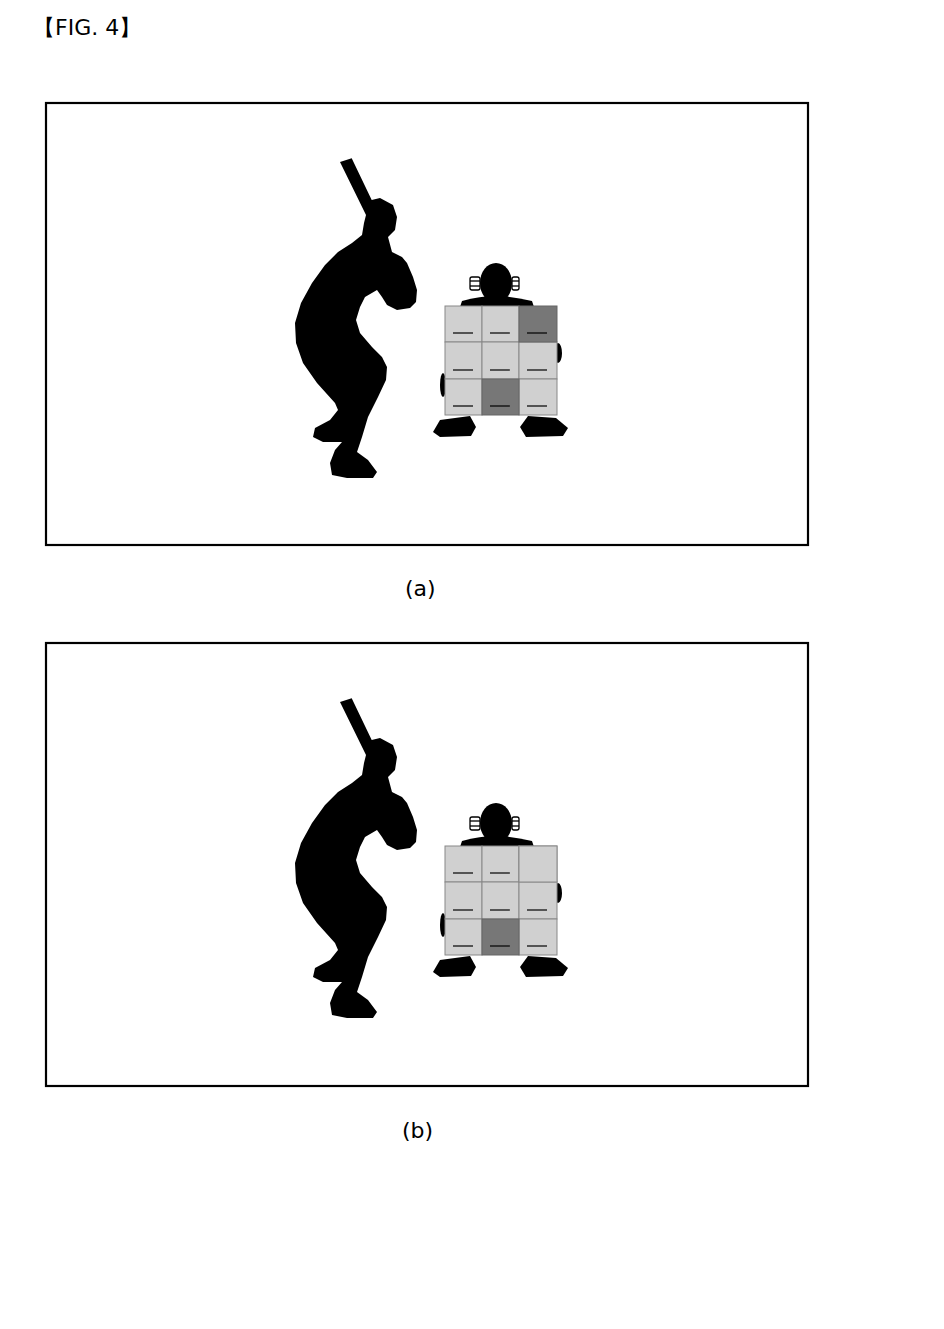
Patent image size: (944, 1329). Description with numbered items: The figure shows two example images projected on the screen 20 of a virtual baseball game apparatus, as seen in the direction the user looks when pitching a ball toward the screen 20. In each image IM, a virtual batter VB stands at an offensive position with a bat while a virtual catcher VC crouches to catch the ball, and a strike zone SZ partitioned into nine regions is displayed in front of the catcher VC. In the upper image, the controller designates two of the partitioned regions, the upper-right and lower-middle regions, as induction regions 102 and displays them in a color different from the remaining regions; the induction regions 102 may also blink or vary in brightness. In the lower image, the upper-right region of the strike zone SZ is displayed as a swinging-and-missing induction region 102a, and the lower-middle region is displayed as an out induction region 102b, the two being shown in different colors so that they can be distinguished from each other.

The screen 20 is at (810, 314).
The induction regions 102 is at (553, 308).
The swinging-and-missing induction region 102a is at (553, 848).
The out induction region 102b is at (513, 955).
The virtual batter VB is at (335, 249).
The virtual catcher VC is at (539, 281).
The strike zone SZ is at (559, 378).
The image IM is at (748, 172).